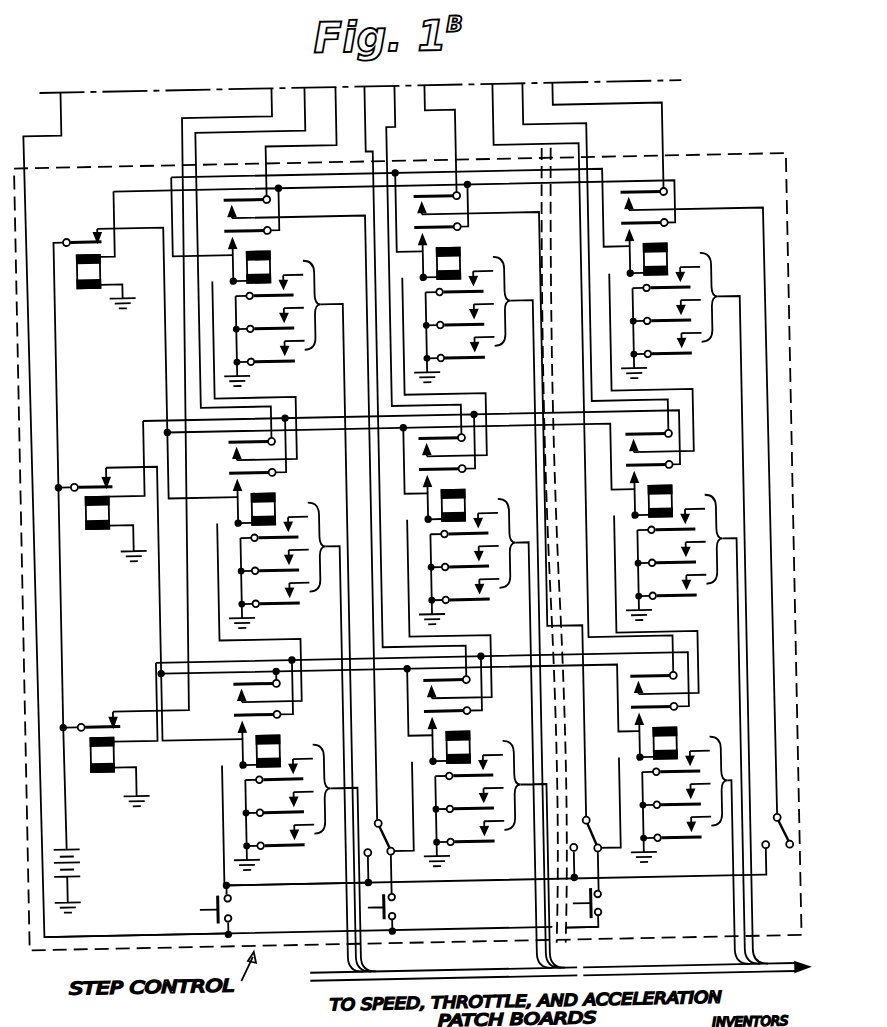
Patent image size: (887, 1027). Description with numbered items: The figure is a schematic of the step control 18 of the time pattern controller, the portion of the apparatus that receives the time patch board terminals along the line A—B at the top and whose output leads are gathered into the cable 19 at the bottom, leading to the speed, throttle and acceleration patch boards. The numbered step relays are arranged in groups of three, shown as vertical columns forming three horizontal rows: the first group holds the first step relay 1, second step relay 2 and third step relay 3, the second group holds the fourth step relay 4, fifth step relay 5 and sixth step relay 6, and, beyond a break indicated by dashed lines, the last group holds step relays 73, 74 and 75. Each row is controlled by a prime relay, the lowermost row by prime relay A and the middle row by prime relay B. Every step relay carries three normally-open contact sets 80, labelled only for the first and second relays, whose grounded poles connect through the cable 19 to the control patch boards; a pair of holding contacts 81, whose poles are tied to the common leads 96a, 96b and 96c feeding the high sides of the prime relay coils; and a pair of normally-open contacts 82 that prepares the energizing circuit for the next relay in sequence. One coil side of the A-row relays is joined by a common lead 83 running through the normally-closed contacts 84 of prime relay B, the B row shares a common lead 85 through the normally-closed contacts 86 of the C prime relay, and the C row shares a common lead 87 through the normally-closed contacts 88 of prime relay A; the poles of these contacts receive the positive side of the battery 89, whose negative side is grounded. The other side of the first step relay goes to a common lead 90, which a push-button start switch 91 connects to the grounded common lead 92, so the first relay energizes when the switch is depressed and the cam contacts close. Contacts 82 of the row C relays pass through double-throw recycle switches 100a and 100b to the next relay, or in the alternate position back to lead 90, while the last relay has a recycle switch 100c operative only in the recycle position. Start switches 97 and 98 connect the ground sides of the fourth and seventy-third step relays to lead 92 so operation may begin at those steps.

The first step relay 1 is at (243, 686).
The second step relay 2 is at (261, 385).
The third step relay 3 is at (290, 446).
The fourth step relay 4 is at (436, 467).
The fifth step relay 5 is at (449, 382).
The sixth step relay 6 is at (452, 199).
The seventy-third step relay 73 is at (602, 463).
The seventy-fourth step relay 74 is at (615, 379).
The seventy-fifth step relay 75 is at (660, 198).
The normally-open contacts 80 is at (297, 580).
The holding contacts 81 is at (258, 237).
The normally-open contacts 82 is at (244, 203).
The common lead 83 is at (327, 669).
The common lead 85 is at (327, 428).
The common lead 87 is at (340, 173).
The common lead 96a is at (324, 657).
The common lead 96b is at (323, 415).
The common lead 96c is at (299, 186).
The normally-closed contacts 84 is at (88, 479).
The normally-closed contacts 86 is at (90, 237).
The normally-closed contacts 88 is at (101, 718).
The battery 89 is at (72, 866).
The common lead 90 is at (312, 882).
The start switch 91 is at (212, 896).
The common lead 92 is at (157, 929).
The start switch 97 is at (388, 906).
The start switch 98 is at (595, 906).
The recycle switch 100a is at (387, 853).
The recycle switch 100b is at (597, 853).
The recycle switch 100c is at (783, 858).
The step control 18 is at (284, 947).
The cable 19 is at (656, 977).
The prime relay A is at (347, 87).
The prime relay B is at (372, 502).